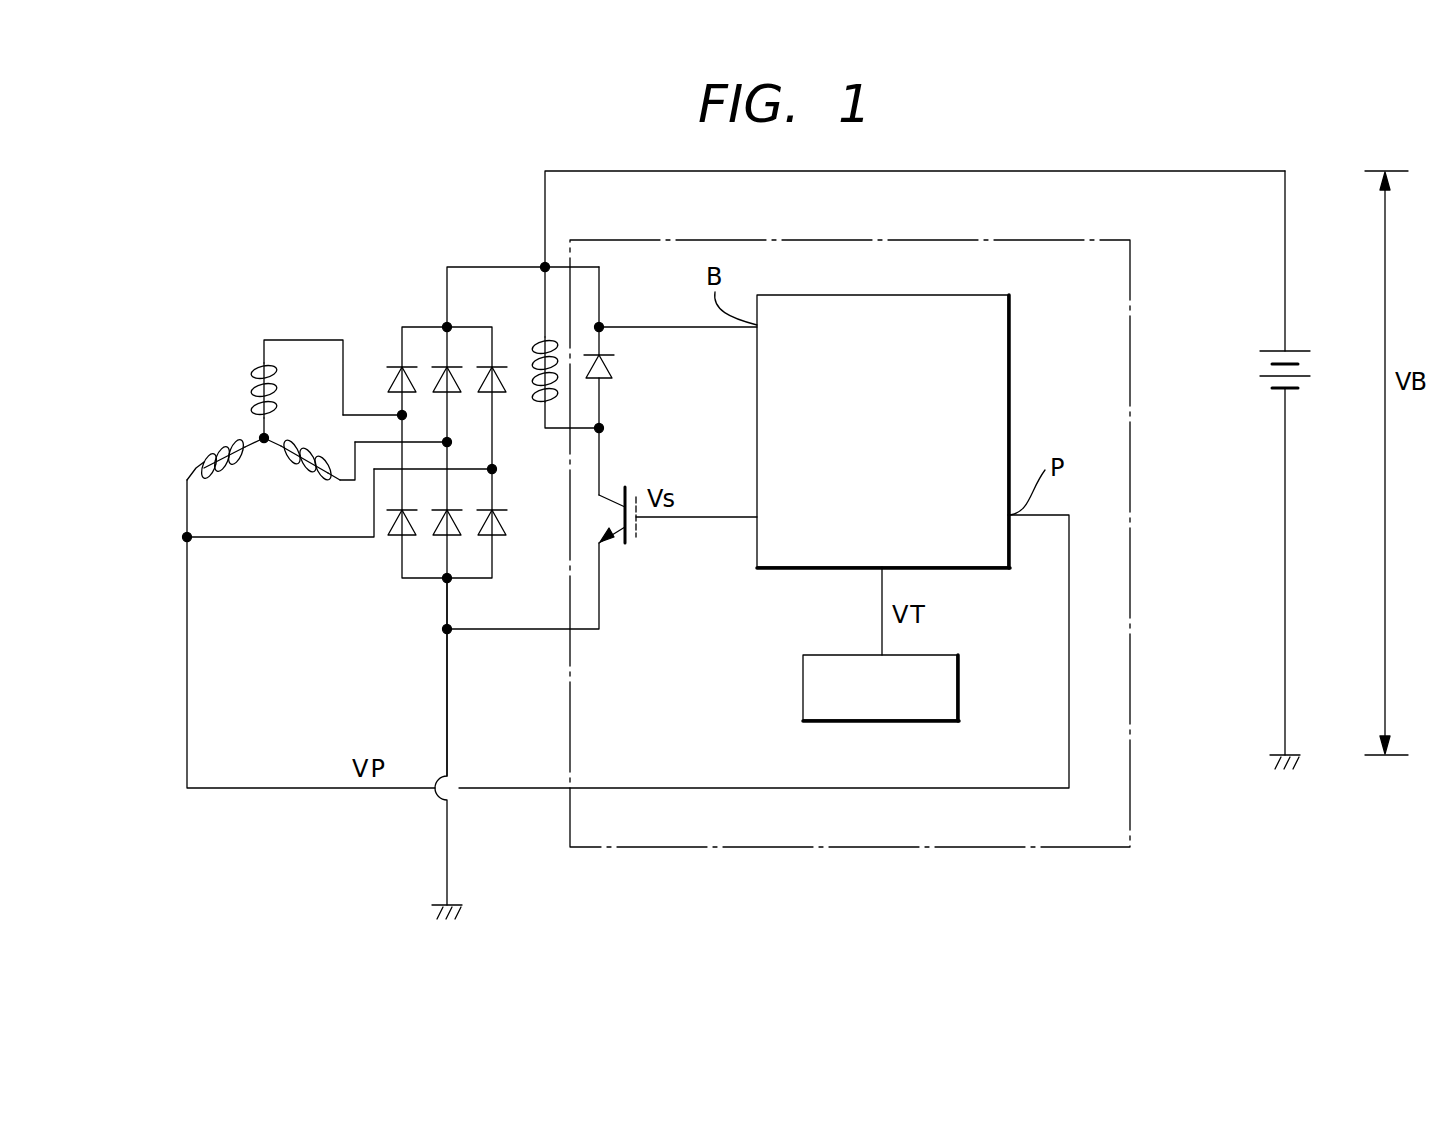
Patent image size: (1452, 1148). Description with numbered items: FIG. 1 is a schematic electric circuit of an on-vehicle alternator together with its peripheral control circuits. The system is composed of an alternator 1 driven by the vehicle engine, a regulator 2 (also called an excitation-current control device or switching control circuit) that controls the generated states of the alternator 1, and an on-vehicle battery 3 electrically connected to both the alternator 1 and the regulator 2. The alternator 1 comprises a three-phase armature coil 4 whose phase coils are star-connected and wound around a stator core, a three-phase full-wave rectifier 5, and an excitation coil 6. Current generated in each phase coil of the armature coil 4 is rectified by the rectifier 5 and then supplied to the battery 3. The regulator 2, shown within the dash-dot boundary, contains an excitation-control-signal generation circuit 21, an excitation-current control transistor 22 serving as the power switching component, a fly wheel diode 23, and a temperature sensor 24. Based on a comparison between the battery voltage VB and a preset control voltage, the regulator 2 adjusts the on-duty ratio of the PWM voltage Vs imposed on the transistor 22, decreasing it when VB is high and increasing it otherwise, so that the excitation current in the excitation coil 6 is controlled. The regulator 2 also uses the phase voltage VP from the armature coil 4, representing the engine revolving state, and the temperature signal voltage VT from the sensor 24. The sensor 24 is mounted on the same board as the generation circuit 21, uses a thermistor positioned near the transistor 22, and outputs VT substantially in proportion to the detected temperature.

The alternator 1 is at (313, 572).
The regulator 2 is at (1131, 477).
The on-vehicle battery 3 is at (1297, 349).
The three-phase armature coil 4 is at (226, 447).
The three-phase full-wave rectifier 5 is at (398, 365).
The excitation coil 6 is at (545, 405).
The excitation-control-signal generation circuit 21 is at (1010, 388).
The excitation-current control transistor 22 is at (606, 497).
The fly wheel diode 23 is at (613, 368).
The temperature sensor 24 is at (958, 688).